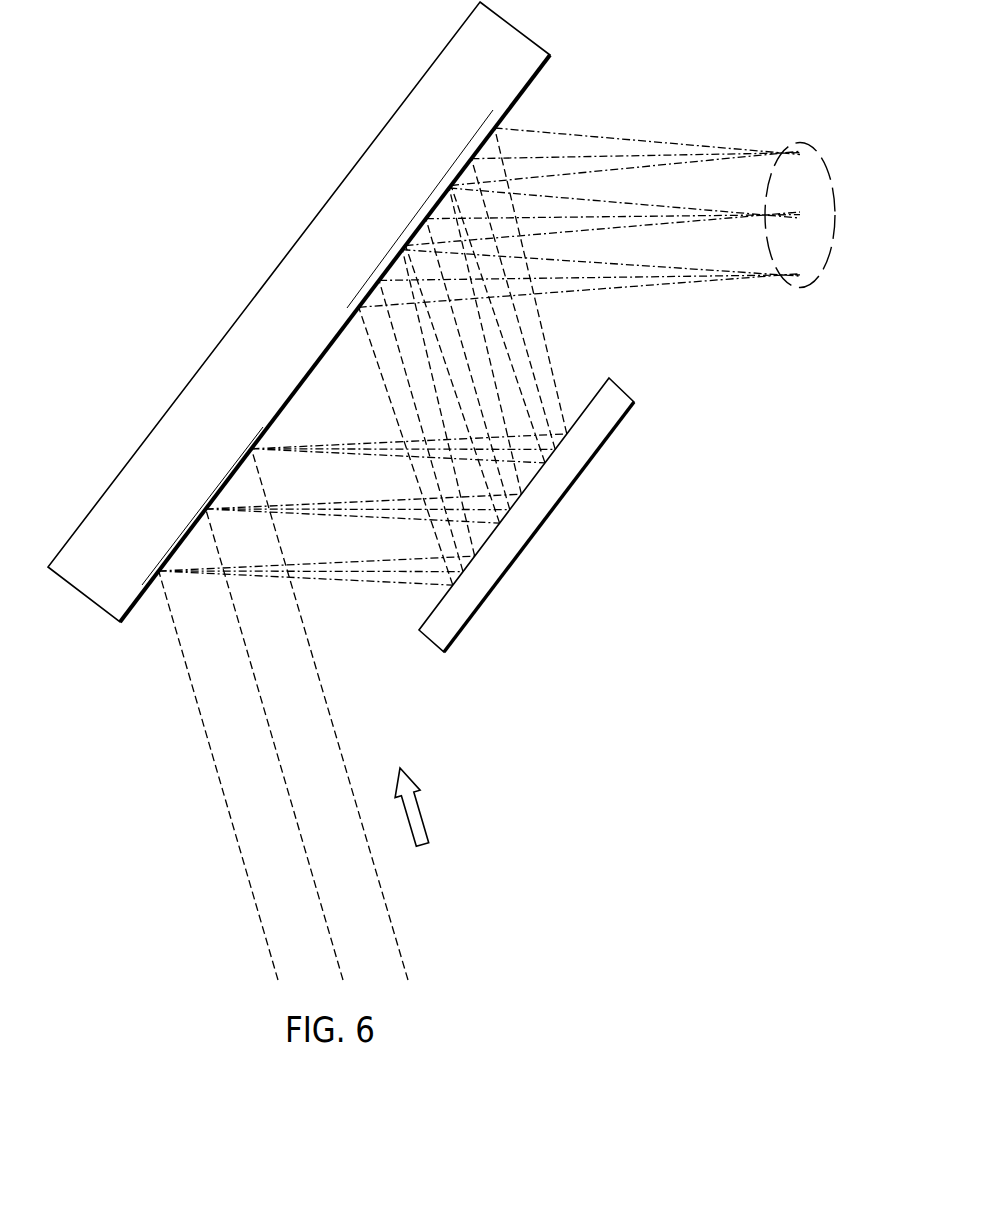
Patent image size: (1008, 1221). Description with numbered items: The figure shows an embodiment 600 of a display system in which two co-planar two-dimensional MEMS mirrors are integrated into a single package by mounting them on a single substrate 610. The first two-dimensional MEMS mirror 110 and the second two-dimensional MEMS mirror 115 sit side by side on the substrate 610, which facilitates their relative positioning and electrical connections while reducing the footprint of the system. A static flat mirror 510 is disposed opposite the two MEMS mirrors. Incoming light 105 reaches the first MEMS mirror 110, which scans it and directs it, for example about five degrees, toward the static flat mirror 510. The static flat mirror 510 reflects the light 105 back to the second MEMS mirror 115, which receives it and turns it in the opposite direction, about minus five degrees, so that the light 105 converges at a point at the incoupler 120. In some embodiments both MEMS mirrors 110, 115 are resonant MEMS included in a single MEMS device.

The embodiment of the display system 600 is at (167, 78).
The substrate 610 is at (263, 283).
The second 2-D MEMS mirror 115 is at (479, 134).
The first 2-D MEMS mirror 110 is at (203, 504).
The static flat mirror 510 is at (541, 523).
The incoupler 120 is at (823, 160).
The light 105 is at (219, 778).